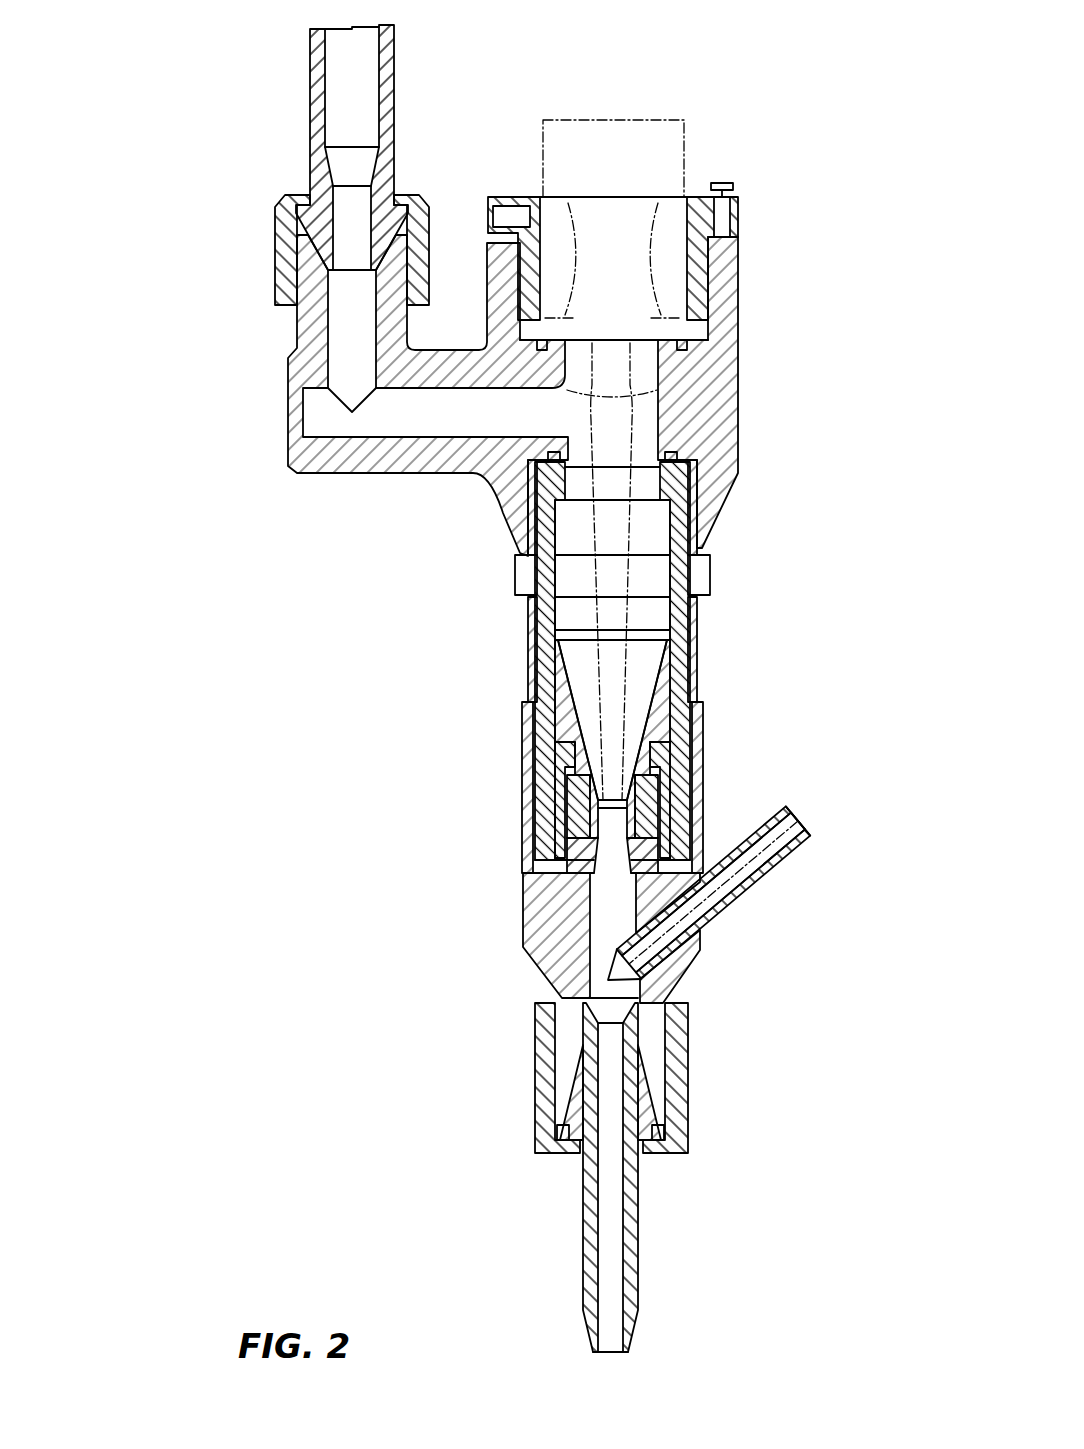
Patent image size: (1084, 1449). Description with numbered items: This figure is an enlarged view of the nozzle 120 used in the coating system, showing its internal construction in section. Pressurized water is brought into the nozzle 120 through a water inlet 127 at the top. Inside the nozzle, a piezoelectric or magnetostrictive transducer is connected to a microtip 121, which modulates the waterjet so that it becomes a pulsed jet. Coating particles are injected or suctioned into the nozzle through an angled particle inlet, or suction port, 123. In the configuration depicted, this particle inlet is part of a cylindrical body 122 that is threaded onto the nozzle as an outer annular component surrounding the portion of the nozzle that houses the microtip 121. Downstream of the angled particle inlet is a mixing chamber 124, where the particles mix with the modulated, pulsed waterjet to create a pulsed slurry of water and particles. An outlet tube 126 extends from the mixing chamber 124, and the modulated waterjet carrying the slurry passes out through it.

The nozzle 120 is at (168, 118).
The microtip 121 is at (640, 637).
The cylindrical body 122 is at (658, 896).
The angled particle inlet (suction port) 123 is at (782, 828).
The mixing chamber 124 is at (598, 988).
The outlet tube 126 is at (638, 1255).
The water inlet 127 is at (385, 95).